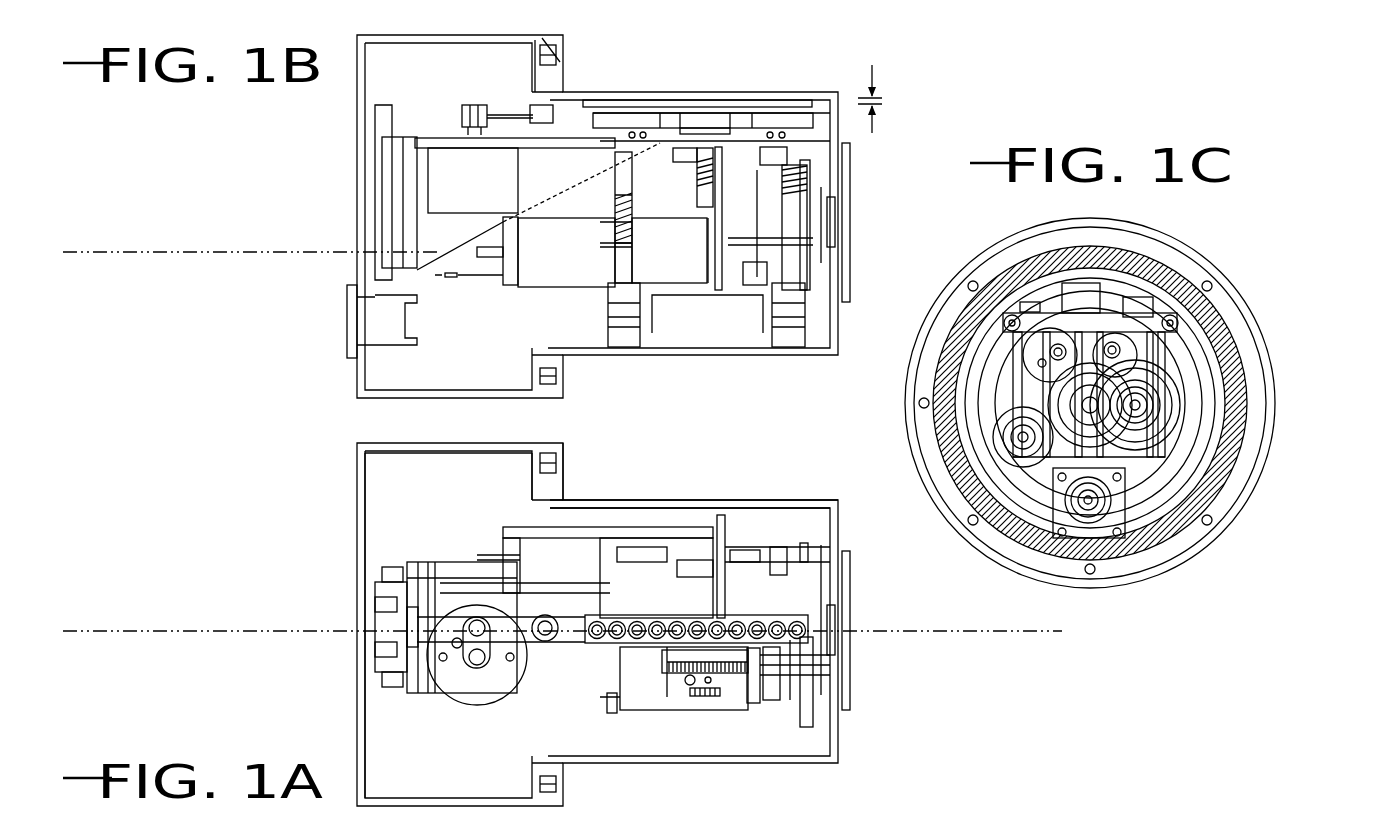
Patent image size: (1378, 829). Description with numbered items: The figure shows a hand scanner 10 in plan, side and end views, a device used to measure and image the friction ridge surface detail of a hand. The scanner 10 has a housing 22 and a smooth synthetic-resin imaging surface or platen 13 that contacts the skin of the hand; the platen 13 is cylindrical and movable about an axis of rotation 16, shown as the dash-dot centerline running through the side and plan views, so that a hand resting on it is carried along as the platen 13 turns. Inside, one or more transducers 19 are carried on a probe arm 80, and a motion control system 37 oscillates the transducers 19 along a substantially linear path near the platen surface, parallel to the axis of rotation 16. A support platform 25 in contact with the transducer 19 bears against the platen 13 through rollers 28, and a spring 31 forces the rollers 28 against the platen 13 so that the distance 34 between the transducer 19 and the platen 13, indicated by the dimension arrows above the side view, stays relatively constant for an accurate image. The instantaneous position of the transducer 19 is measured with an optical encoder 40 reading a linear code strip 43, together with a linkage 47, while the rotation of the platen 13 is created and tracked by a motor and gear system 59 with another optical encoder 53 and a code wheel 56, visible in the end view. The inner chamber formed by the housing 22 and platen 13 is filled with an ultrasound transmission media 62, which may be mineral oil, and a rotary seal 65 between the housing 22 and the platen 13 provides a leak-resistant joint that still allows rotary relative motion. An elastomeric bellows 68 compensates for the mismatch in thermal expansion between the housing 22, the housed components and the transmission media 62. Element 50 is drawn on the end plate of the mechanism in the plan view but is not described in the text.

In FIG. 1B, the hand scanner 10 is at (316, 122).
In FIG. 1A, the hand scanner 10 is at (306, 674).
In FIG. 1C, the hand scanner 10 is at (1252, 251).
In FIG. 1A, the platen 13 is at (649, 496).
In FIG. 1B, the axis of rotation 16 is at (122, 252).
In FIG. 1A, the axis of rotation 16 is at (233, 629).
In FIG. 1B, the transducer 19 is at (743, 92).
In FIG. 1A, the transducer 19 is at (587, 645).
In FIG. 1B, the housing 22 is at (353, 133).
In FIG. 1A, the housing 22 is at (539, 445).
In FIG. 1A, the support platform 25 is at (677, 541).
In FIG. 1B, the roller 28 is at (630, 343).
In FIG. 1B, the spring 31 is at (604, 208).
In FIG. 1B, the distance 34 is at (892, 99).
In FIG. 1A, the motion control system 37 is at (548, 605).
In FIG. 1A, the optical encoder 40 is at (692, 690).
In FIG. 1A, the linear code strip 43 is at (735, 653).
In FIG. 1A, the linkage 47 is at (523, 625).
In FIG. 1A, the end plate 50 is at (492, 682).
In FIG. 1C, the optical encoder 53 is at (1156, 465).
In FIG. 1C, the code wheel 56 is at (1186, 427).
In FIG. 1B, the motor and gear system 59 is at (561, 268).
In FIG. 1B, the ultrasound transmission media 62 is at (440, 79).
In FIG. 1A, the ultrasound transmission media 62 is at (467, 485).
In FIG. 1B, the rotary seal 65 is at (559, 46).
In FIG. 1B, the elastomeric bellows 68 is at (386, 328).
In FIG. 1A, the probe arm 80 is at (655, 650).